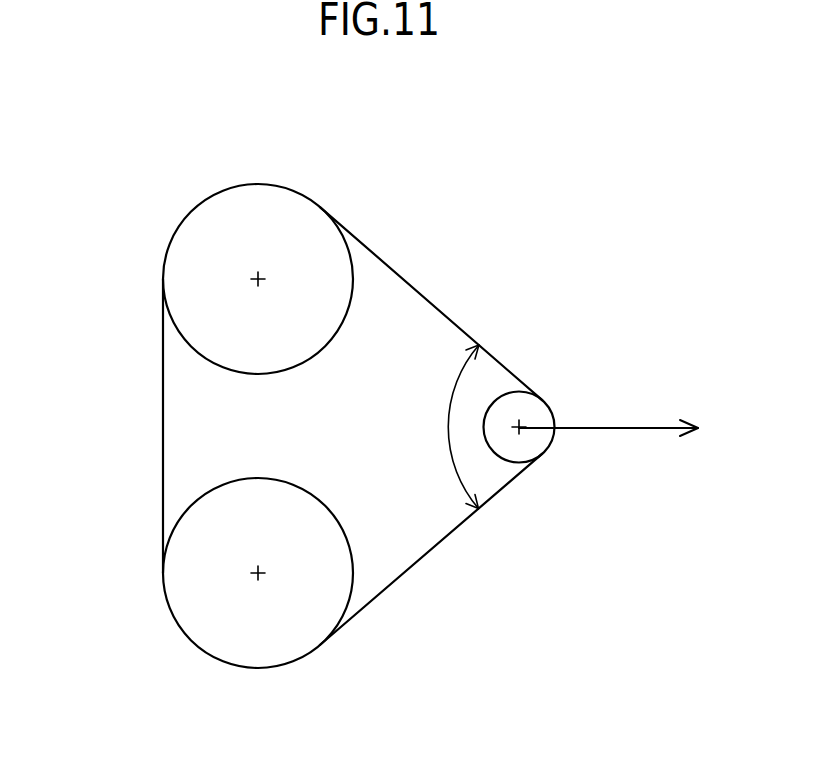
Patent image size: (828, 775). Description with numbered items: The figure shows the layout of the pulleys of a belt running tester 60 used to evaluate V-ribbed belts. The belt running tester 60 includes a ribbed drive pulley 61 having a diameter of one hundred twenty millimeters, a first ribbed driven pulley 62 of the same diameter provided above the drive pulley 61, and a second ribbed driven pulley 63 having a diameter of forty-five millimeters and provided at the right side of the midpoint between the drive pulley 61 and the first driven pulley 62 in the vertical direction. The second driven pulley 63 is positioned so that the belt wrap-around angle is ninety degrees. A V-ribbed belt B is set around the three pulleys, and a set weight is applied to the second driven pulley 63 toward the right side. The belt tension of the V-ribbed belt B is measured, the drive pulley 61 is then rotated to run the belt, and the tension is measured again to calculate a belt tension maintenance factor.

The belt running tester 60 is at (490, 148).
The drive pulley 61 is at (258, 650).
The first driven pulley 62 is at (254, 210).
The second driven pulley 63 is at (532, 410).
The V-ribbed belt B is at (417, 562).